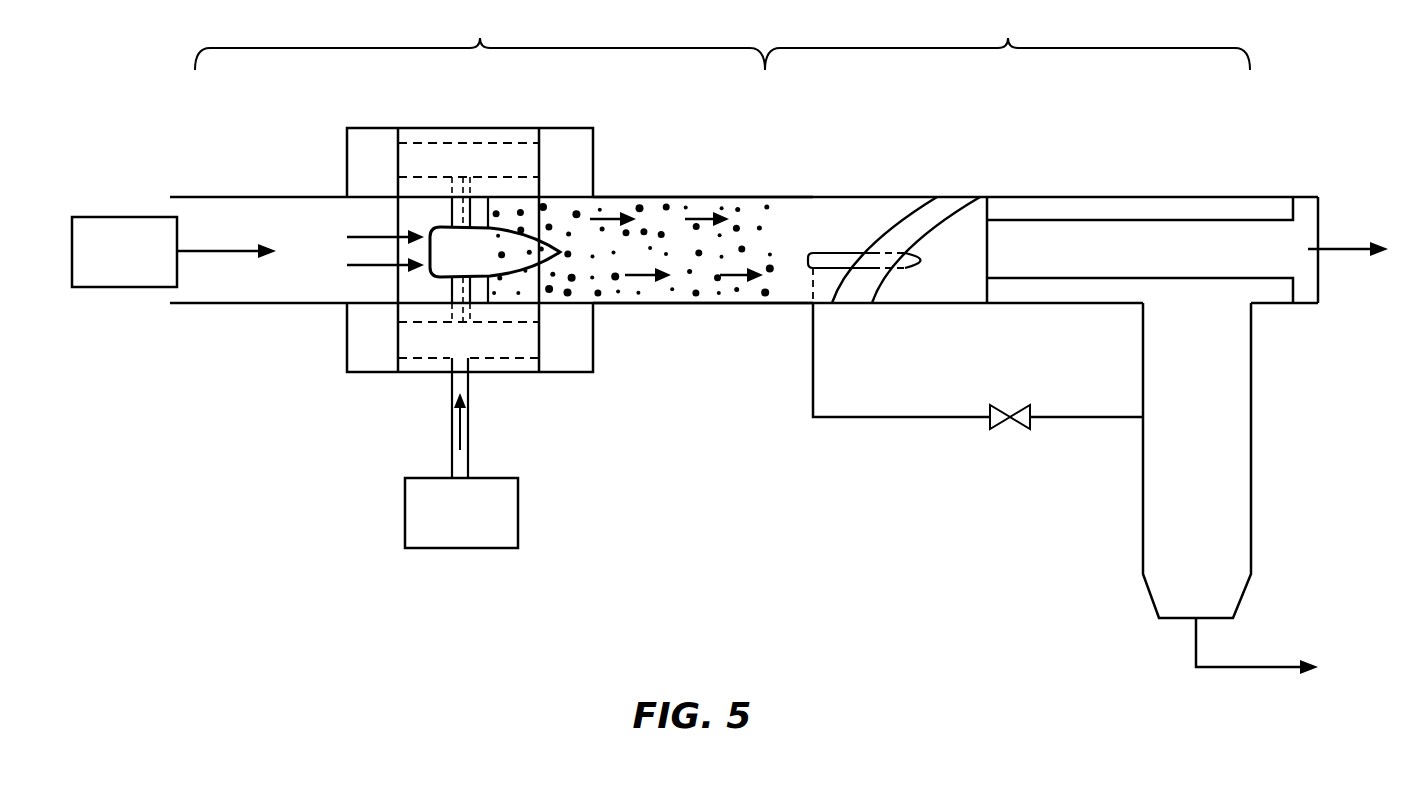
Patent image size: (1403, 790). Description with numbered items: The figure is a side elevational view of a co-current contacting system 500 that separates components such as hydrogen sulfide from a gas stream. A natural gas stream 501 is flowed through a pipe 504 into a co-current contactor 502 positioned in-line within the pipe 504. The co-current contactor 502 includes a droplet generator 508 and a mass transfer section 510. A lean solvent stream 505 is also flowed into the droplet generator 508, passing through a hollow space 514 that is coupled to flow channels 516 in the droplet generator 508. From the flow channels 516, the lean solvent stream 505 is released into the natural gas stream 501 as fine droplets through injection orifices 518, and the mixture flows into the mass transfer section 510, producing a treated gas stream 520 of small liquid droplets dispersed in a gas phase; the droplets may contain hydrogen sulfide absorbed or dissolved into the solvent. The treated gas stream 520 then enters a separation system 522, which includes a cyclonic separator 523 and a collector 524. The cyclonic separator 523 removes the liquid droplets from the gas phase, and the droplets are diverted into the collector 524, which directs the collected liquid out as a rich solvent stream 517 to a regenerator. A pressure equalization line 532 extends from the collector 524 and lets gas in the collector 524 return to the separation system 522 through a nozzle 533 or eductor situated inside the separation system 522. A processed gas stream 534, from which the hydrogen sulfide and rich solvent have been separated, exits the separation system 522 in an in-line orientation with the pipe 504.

The co-current contacting system 500 is at (218, 616).
The natural gas stream 501 is at (104, 216).
The co-current contactor 502 is at (480, 40).
The pipe 504 is at (218, 306).
The lean solvent stream 505 is at (428, 477).
The droplet generator 508 is at (410, 127).
The mass transfer section 510 is at (625, 307).
The hollow space 514 is at (443, 158).
The flow channels 516 is at (460, 190).
The rich solvent stream 517 is at (1243, 669).
The injection orifices 518 is at (452, 212).
The treated gas stream 520 is at (608, 222).
The separation system 522 is at (1007, 40).
The cyclonic separator 523 is at (902, 218).
The collector 524 is at (1230, 478).
The pressure equalization line 532 is at (1075, 420).
The nozzle 533 is at (830, 251).
The processed gas stream 534 is at (1352, 247).